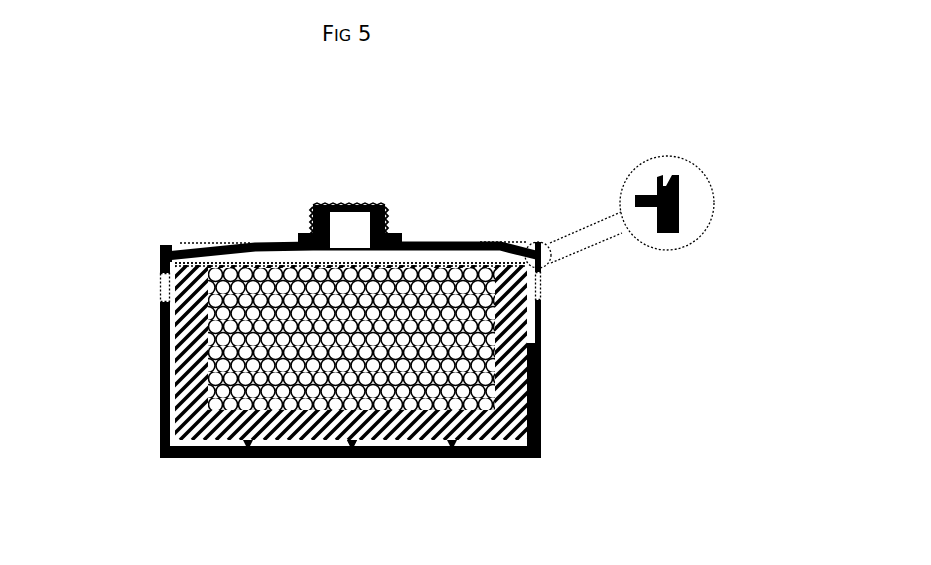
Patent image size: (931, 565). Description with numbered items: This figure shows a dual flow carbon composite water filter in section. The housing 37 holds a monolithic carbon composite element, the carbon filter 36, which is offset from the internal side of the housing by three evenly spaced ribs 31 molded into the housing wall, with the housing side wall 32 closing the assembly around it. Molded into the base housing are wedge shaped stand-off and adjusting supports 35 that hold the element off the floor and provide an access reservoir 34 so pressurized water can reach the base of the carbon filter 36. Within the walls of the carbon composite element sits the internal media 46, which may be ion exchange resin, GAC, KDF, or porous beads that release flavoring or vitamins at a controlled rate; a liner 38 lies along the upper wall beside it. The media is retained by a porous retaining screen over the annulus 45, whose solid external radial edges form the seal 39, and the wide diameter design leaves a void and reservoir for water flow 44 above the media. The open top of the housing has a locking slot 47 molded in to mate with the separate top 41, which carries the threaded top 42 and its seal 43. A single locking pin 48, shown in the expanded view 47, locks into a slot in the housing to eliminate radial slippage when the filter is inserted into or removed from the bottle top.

The ribs 31 is at (541, 362).
The housing side wall 32 is at (168, 352).
The access reservoir 34 is at (285, 449).
The wedged shaped stand-off and adjusting supports 35 is at (352, 449).
The carbon filter 36 is at (541, 318).
The housing 37 is at (160, 318).
The insulating gasket (right) 38 is at (541, 283).
The seal 39 is at (160, 265).
The separate top 41 is at (430, 242).
The threaded top 42 is at (350, 205).
The seal 43 is at (305, 233).
The void and reservoir for water flow 44 is at (283, 264).
The annulus 45 is at (255, 262).
The internal media 46 is at (541, 383).
The locking slot / expanded view 47 is at (633, 212).
The locking pin 48 is at (654, 184).